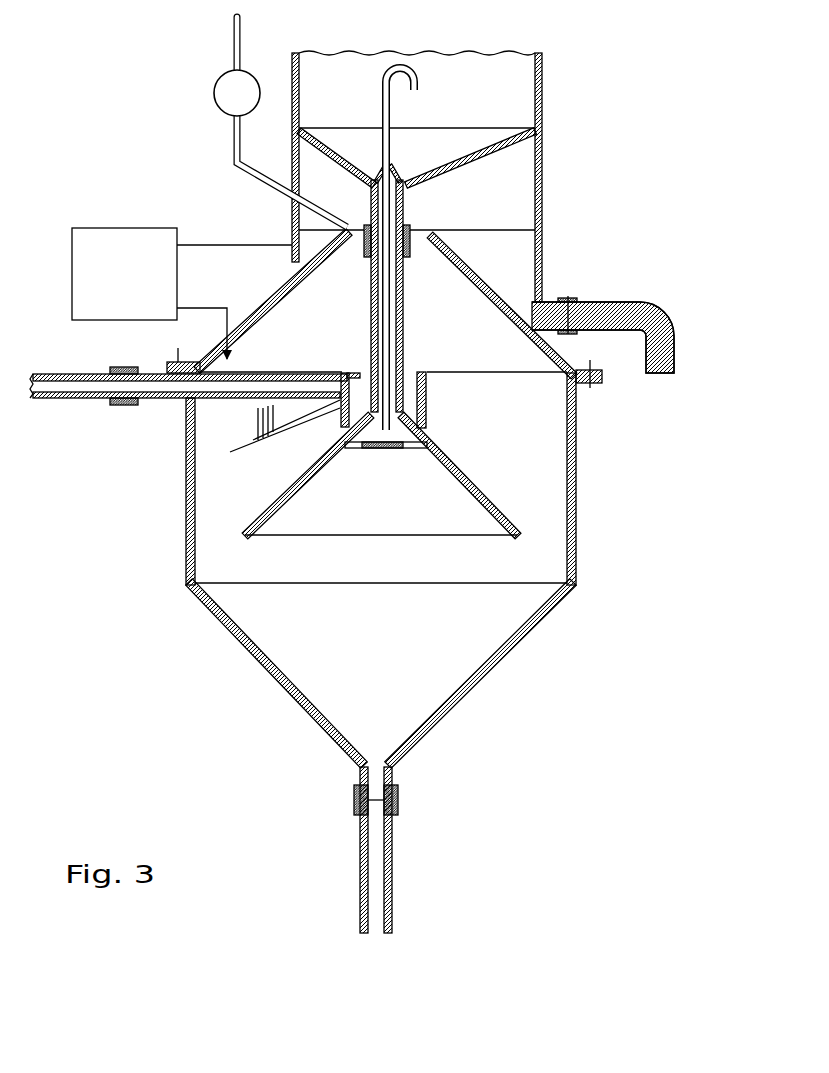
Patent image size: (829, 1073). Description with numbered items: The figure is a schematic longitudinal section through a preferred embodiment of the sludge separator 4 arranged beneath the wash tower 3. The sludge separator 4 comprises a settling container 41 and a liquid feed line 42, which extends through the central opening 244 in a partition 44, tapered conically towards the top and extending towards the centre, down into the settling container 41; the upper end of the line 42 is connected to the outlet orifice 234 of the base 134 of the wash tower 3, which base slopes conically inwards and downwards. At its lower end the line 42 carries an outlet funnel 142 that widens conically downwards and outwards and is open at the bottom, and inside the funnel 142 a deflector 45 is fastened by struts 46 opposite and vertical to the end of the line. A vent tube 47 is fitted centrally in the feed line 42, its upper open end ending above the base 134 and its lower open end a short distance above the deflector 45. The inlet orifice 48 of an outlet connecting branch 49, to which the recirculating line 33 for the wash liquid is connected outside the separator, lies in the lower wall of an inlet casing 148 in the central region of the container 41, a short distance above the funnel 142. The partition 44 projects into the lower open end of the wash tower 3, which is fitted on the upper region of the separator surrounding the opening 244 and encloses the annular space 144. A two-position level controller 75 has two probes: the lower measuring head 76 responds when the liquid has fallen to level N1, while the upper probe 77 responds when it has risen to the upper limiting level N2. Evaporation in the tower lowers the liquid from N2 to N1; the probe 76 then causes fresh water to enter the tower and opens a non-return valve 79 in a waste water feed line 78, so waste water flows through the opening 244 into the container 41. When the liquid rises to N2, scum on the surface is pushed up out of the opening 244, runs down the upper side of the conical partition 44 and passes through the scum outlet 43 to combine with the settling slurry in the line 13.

The wash tower 3 is at (551, 104).
The sludge separator 4 is at (200, 625).
The line 13 is at (391, 870).
The recirculating line 33 is at (85, 388).
The settling container 41 is at (394, 501).
The liquid feed line 42 is at (405, 290).
The scum outlet 43 is at (612, 302).
The partition 44 is at (263, 292).
The deflector 45 is at (372, 449).
The struts 46 is at (410, 449).
The vent tube 47 is at (383, 88).
The inlet orifice 48 is at (418, 429).
The outlet connecting branch 49 is at (297, 370).
The two-position level controller 75 is at (182, 274).
The lower measuring head 76 is at (233, 355).
The upper probe 77 is at (353, 238).
The waste water feed line 78 is at (233, 150).
The non-return valve 79 is at (222, 80).
The base 134 is at (474, 155).
The outlet funnel 142 is at (477, 493).
The annular space 144 is at (497, 179).
The inlet casing 148 is at (427, 389).
The outlet orifice 234 is at (397, 172).
The central opening 244 is at (426, 235).
The lower level N1 is at (452, 368).
The upper limiting level N2 is at (362, 228).